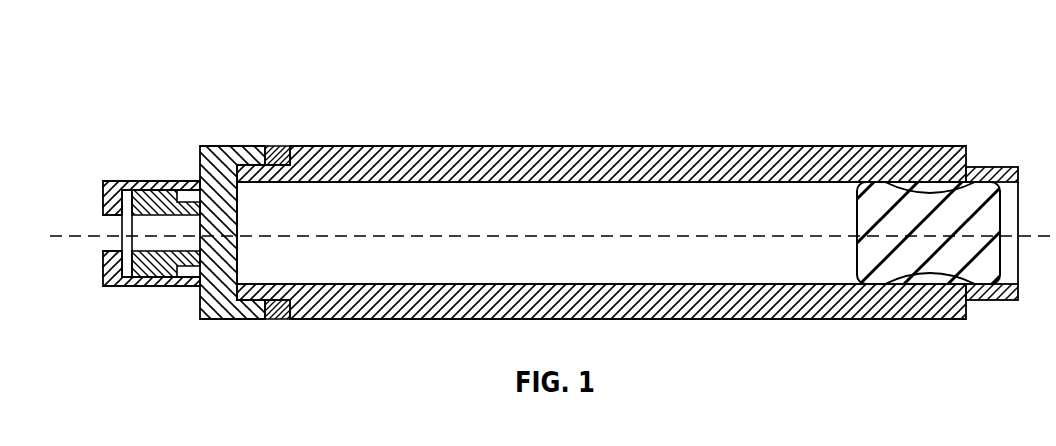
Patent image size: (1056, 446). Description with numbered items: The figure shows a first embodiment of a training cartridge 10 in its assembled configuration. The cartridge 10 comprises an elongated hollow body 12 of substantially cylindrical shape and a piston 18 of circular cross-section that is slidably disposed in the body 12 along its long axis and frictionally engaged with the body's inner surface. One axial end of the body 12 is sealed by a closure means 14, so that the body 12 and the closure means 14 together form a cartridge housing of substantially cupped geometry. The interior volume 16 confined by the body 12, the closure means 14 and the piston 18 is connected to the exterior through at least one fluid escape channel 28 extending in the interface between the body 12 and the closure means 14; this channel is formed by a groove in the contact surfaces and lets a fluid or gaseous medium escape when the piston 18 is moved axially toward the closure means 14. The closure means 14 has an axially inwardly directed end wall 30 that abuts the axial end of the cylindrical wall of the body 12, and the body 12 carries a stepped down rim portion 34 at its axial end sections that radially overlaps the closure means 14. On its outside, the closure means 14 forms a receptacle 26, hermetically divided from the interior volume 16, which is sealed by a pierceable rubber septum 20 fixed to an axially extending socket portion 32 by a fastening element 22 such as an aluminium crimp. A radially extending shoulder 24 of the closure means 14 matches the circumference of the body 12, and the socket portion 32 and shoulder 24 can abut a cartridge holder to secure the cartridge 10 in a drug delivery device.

The cartridge 10 is at (830, 102).
The body 12 is at (462, 147).
The closure means 14 is at (230, 147).
The interior volume 16 is at (622, 197).
The piston 18 is at (945, 188).
The septum 20 is at (123, 285).
The fastening element 22 is at (117, 182).
The shoulder 24 is at (199, 309).
The receptacle 26 is at (167, 240).
The fluid escape channel 28 is at (270, 147).
The end wall 30 is at (237, 257).
The socket portion 32 is at (162, 190).
The rim portion 34 is at (998, 167).